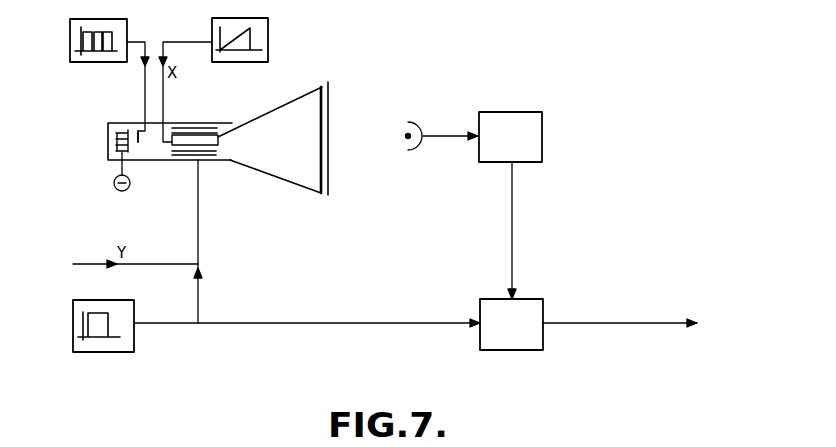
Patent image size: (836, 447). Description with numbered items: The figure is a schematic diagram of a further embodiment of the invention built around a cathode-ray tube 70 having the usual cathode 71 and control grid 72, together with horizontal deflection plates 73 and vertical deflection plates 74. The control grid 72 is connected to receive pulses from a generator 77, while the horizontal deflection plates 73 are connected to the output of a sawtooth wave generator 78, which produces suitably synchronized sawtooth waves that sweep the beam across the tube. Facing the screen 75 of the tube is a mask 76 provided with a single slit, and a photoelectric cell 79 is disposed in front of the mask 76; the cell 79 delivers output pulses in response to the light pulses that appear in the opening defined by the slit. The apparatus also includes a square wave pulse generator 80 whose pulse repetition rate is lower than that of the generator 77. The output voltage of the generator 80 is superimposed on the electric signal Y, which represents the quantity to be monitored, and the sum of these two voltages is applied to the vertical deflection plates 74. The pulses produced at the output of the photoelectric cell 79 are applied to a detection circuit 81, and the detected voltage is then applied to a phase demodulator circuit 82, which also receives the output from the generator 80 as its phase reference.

The cathode-ray tube 70 is at (284, 105).
The cathode 71 is at (135, 122).
The control grid 72 is at (137, 149).
The horizontal deflection plates 73 is at (228, 133).
The vertical deflection plates 74 is at (216, 157).
The screen 75 is at (325, 66).
The mask 76 is at (329, 114).
The generator 77 is at (70, 19).
The sawtooth wave generator 78 is at (268, 18).
The photoelectric cell 79 is at (433, 100).
The square wave pulse generator 80 is at (133, 343).
The detection circuit 81 is at (518, 128).
The phase demodulator circuit 82 is at (528, 312).